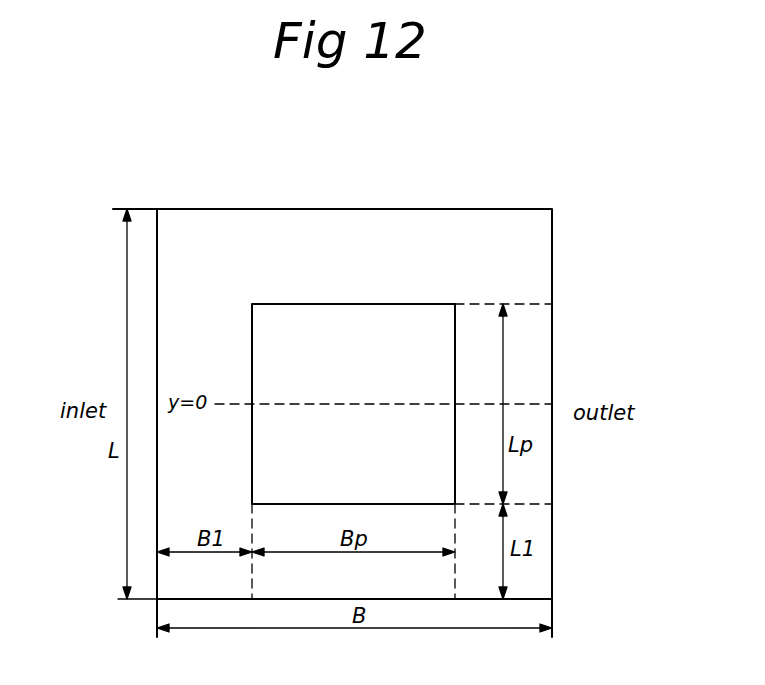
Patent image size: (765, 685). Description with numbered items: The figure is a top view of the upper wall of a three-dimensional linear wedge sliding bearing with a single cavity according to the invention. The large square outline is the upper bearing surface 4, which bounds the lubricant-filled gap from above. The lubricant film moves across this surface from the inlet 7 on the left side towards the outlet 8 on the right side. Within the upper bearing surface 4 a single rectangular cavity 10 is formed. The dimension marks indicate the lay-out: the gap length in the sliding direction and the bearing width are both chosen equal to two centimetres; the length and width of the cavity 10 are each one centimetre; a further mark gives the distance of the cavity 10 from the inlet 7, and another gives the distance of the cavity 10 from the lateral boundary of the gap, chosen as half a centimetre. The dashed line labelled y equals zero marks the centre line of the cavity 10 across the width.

The upper bearing surface 4 is at (528, 250).
The inlet 7 is at (173, 287).
The outlet 8 is at (522, 402).
The cavity 10 is at (353, 360).